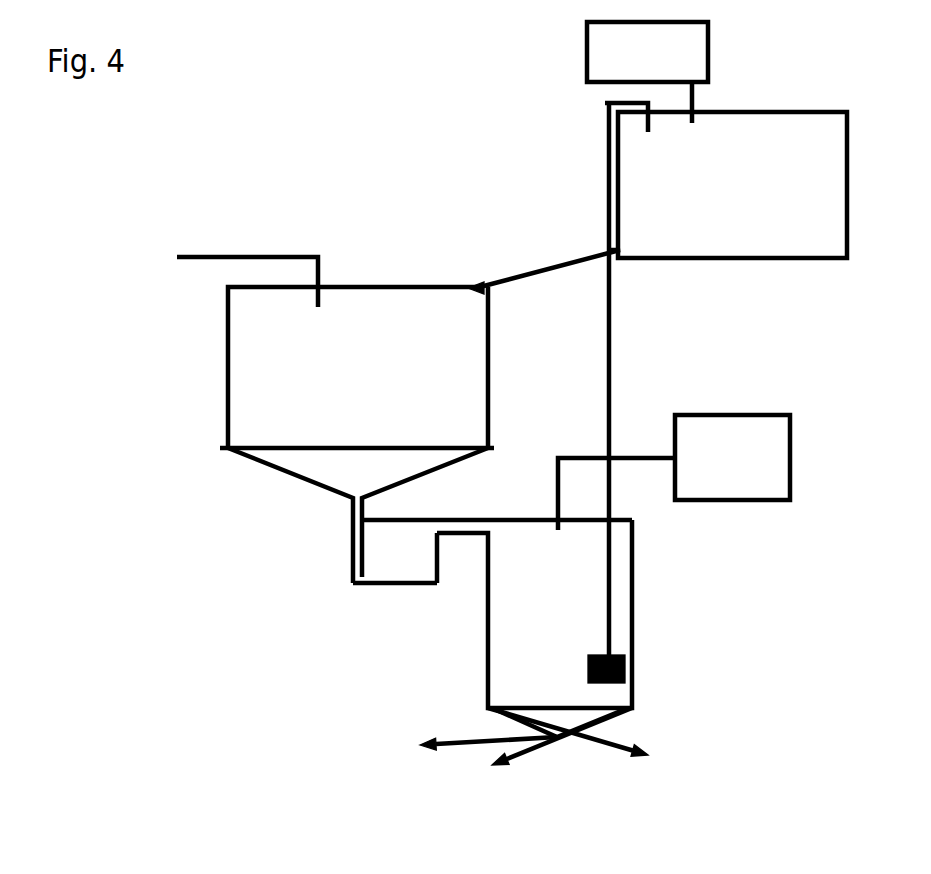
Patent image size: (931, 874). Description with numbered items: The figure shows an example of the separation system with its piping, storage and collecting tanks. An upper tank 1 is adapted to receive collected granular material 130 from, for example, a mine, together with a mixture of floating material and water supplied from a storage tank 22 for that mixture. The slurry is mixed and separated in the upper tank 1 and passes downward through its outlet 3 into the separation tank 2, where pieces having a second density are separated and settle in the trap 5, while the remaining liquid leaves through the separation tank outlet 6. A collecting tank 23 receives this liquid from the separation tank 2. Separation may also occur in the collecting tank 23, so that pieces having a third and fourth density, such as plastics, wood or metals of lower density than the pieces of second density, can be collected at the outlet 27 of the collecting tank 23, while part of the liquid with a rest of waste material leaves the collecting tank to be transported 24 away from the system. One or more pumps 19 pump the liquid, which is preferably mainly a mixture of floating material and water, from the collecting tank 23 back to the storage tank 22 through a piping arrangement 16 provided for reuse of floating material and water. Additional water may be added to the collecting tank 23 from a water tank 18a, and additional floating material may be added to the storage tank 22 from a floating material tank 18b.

The collected granular material 130 is at (217, 268).
The upper tank 1 is at (357, 367).
The outlet tube 3 is at (352, 510).
The separation tank 2 is at (414, 558).
The trap 5 is at (377, 588).
The separation tank outlet 6 is at (438, 520).
The collecting tank 23 is at (534, 614).
The outlet of the collecting tank 27 is at (558, 740).
The transport from the system 24 is at (557, 751).
The pump 19 is at (627, 662).
The storage tank for mixture of floating material and water 22 is at (726, 180).
The floating material tank 18b is at (647, 72).
The water tank 18a is at (674, 472).
The piping arrangement 16 is at (605, 107).